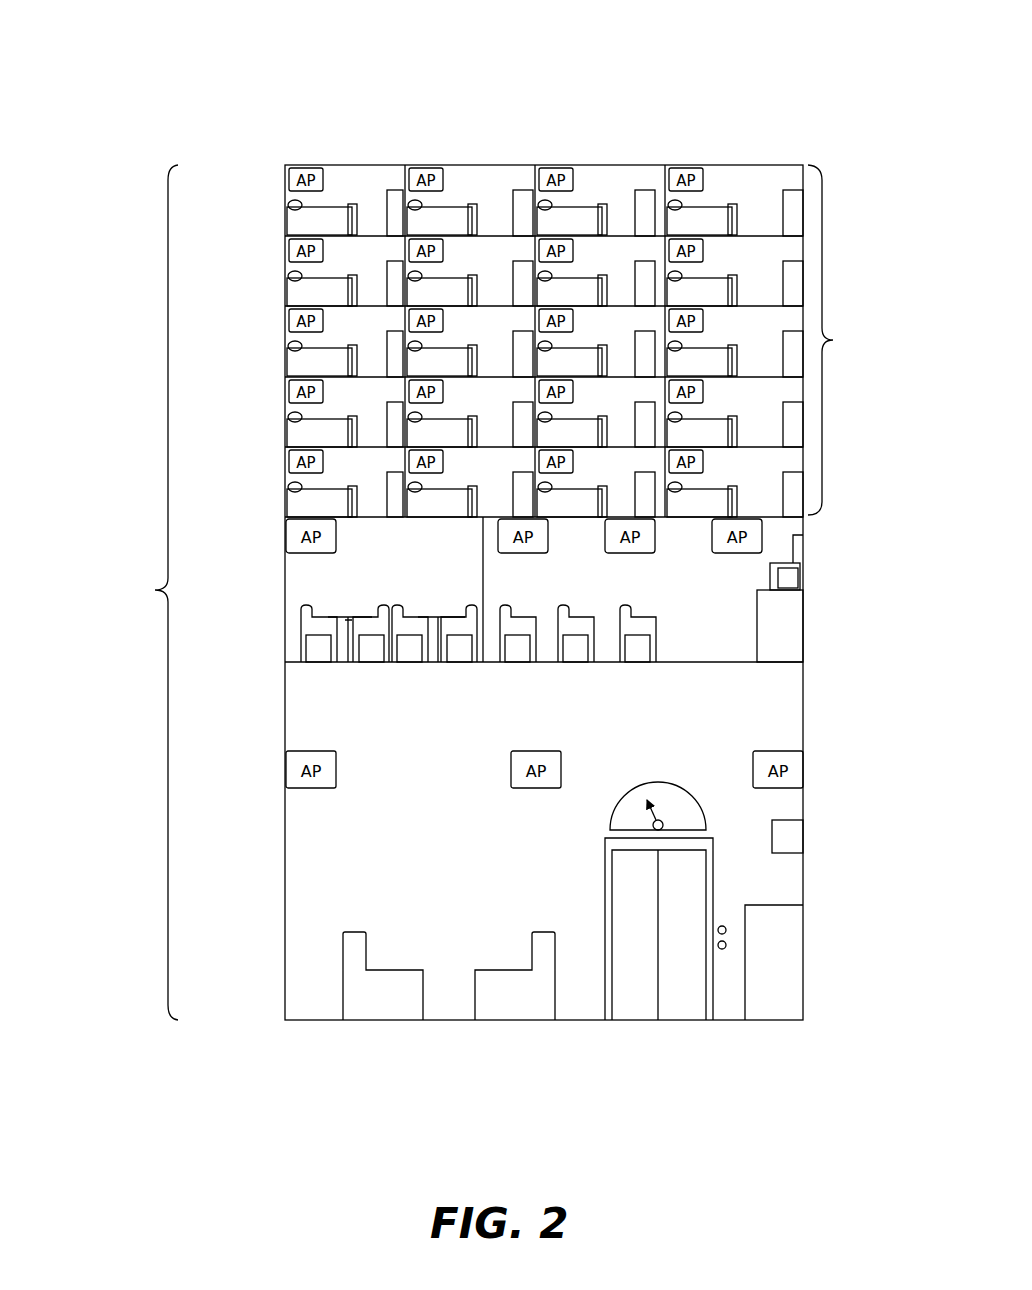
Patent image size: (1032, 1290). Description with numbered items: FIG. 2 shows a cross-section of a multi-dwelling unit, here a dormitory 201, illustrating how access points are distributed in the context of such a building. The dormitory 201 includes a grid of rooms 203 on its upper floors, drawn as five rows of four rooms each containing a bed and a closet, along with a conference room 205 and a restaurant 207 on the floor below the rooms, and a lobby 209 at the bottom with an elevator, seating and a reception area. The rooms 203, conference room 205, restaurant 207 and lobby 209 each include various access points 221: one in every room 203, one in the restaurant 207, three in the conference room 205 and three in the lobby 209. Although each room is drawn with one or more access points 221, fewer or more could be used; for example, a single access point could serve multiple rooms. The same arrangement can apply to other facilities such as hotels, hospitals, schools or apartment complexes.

The dormitory 201 is at (176, 88).
The rooms 203 is at (855, 262).
The conference room 205 is at (805, 610).
The restaurant 207 is at (284, 610).
The lobby 209 is at (808, 725).
The access points 221 is at (675, 165).